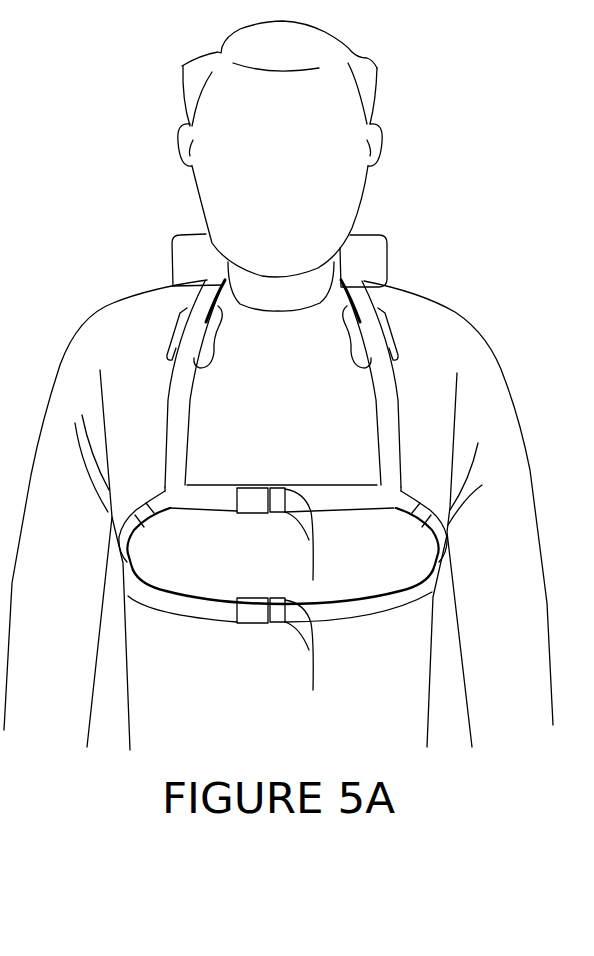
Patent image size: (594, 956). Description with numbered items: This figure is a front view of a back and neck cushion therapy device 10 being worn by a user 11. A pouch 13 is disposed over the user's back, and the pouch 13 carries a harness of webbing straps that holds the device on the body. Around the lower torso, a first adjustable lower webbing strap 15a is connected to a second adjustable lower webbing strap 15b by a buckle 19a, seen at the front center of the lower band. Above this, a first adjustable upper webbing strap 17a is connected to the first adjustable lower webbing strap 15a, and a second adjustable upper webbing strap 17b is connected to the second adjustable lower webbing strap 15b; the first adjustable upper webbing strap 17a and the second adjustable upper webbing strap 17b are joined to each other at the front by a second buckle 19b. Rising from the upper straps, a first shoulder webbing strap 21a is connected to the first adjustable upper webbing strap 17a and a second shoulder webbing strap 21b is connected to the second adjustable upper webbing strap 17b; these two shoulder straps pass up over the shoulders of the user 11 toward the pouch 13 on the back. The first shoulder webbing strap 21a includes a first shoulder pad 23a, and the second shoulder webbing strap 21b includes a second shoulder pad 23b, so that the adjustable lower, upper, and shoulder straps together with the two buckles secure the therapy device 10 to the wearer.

The back and neck cushion therapy device 10 is at (180, 208).
The user 11 is at (367, 73).
The pouch 13 is at (367, 240).
The first adjustable lower webbing strap 15a is at (162, 603).
The second adjustable lower webbing strap 15b is at (416, 586).
The first adjustable upper webbing strap 17a is at (207, 498).
The second adjustable upper webbing strap 17b is at (360, 498).
The buckle 19a is at (253, 613).
The buckle 19b is at (256, 506).
The first shoulder webbing strap 21a is at (180, 412).
The second shoulder webbing strap 21b is at (386, 412).
The first shoulder pad 23a is at (182, 306).
The second shoulder pad 23b is at (383, 306).